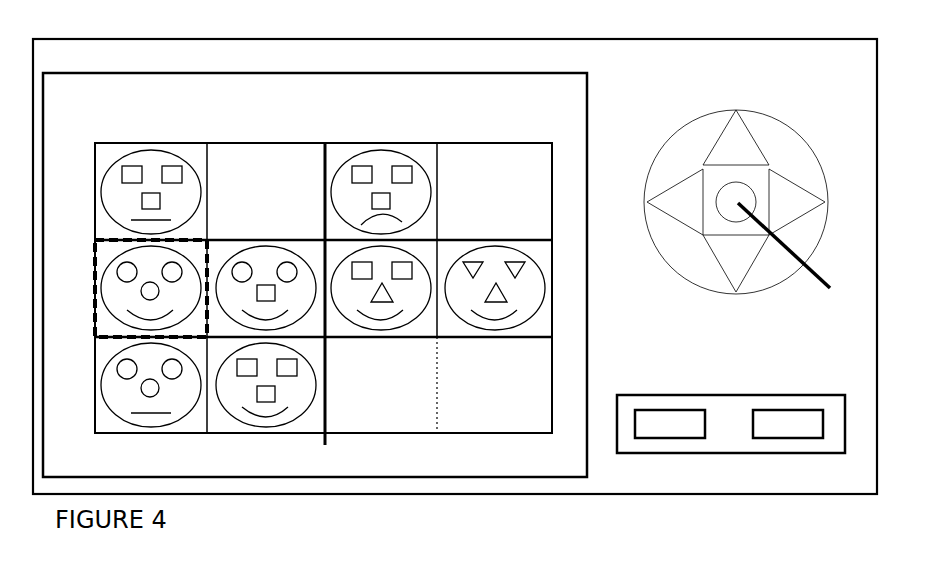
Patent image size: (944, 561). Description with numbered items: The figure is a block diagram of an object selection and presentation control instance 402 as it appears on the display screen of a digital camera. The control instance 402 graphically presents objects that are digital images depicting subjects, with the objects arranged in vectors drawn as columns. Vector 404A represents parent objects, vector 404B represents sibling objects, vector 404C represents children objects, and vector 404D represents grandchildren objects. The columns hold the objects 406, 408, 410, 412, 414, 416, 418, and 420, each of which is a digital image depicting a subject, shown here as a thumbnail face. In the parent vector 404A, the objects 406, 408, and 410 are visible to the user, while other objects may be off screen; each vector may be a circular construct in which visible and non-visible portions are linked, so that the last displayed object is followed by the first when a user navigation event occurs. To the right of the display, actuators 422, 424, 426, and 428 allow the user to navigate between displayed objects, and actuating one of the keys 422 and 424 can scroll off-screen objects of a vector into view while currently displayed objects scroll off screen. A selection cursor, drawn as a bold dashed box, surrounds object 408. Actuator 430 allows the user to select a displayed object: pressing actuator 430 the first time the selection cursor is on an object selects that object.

The object selection and presentation control instance 402 is at (340, 38).
The vector 404A is at (182, 143).
The vector 404B is at (305, 143).
The vector 404C is at (415, 143).
The vector 404D is at (550, 143).
The object 406 is at (103, 192).
The object 408 is at (103, 290).
The object 410 is at (103, 386).
The object 412 is at (318, 388).
The object 414 is at (270, 247).
The object 416 is at (432, 192).
The object 418 is at (381, 332).
The object 420 is at (495, 333).
The actuator 422 is at (736, 137).
The actuator 424 is at (736, 263).
The actuator 426 is at (675, 202).
The actuator 428 is at (797, 202).
The actuator 430 is at (800, 262).